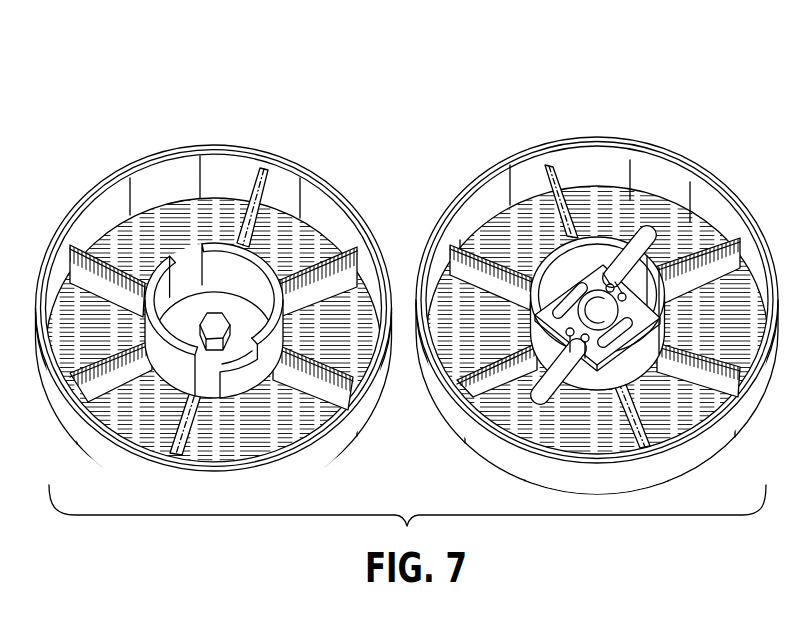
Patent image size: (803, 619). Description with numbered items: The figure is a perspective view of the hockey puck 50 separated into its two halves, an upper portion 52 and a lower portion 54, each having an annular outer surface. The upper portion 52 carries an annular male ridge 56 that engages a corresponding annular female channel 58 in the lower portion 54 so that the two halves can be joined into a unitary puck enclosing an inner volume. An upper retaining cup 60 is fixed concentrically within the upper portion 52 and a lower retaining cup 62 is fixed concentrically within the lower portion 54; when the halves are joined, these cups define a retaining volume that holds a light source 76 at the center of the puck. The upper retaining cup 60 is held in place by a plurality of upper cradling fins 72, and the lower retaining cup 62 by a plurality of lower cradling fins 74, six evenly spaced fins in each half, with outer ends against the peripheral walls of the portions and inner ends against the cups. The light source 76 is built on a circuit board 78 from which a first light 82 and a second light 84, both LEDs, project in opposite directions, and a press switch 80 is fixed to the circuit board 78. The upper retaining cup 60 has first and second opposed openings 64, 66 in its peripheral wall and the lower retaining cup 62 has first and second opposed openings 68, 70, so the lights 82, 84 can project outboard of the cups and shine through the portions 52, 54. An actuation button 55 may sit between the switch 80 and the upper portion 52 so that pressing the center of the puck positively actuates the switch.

The hockey puck 50 is at (407, 267).
The upper portion 52 is at (162, 174).
The lower portion 54 is at (658, 180).
The actuation button 55 is at (240, 382).
The annular male ridge 56 is at (289, 163).
The annular female channel 58 is at (587, 148).
The upper retaining cup 60 is at (266, 262).
The lower retaining cup 62 is at (546, 254).
The first opening 64 is at (182, 277).
The second opening 66 is at (248, 386).
The first opening 68 is at (590, 380).
The second opening 70 is at (597, 270).
The upper cradling fins 72 is at (148, 437).
The lower cradling fins 74 is at (475, 364).
The light source 76 is at (644, 387).
The circuit board 78 is at (643, 360).
The press switch 80 is at (688, 284).
The first light 82 is at (535, 390).
The second light 84 is at (653, 246).